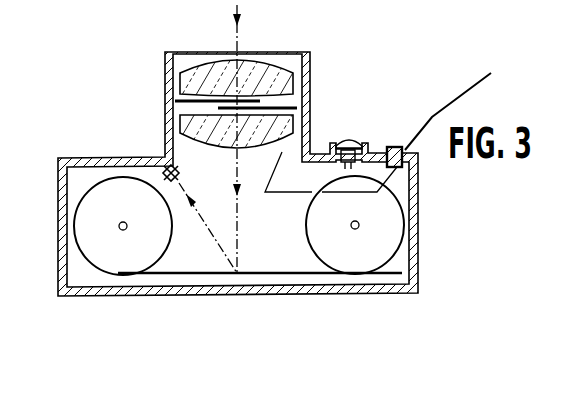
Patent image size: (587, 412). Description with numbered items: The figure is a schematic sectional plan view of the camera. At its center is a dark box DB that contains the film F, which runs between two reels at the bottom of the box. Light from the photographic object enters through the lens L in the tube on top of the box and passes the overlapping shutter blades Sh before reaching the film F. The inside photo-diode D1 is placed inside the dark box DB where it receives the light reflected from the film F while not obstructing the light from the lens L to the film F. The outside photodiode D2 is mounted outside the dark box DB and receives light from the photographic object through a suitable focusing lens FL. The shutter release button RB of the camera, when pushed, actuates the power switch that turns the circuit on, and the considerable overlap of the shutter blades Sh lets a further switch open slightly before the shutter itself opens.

The dark box DB is at (146, 156).
The lens L is at (264, 70).
The shutter blades Sh is at (298, 100).
The inside photo-diode D1 is at (200, 219).
The focusing lens FL is at (351, 142).
The outside photodiode D2 is at (358, 162).
The shutter release button RB is at (461, 106).
The film F is at (263, 274).